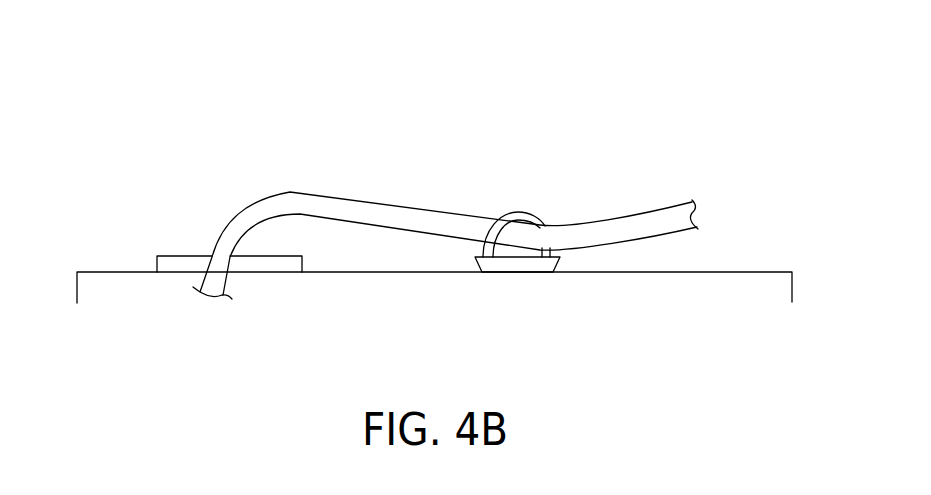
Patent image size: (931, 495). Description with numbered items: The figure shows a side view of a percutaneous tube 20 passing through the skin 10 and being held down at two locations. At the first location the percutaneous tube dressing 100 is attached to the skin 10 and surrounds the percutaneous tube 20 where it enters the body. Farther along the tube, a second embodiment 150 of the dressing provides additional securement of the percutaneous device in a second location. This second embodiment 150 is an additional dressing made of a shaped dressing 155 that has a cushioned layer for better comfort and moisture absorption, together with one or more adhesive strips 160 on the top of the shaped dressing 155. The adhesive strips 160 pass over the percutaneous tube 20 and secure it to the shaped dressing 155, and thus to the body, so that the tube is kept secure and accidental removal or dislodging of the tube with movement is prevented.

The skin 10 is at (753, 272).
The percutaneous tube 20 is at (342, 195).
The percutaneous tube dressing 100 is at (182, 256).
The second embodiment 150 is at (586, 197).
The shaped dressing 155 is at (518, 272).
The adhesive strips 160 is at (513, 217).